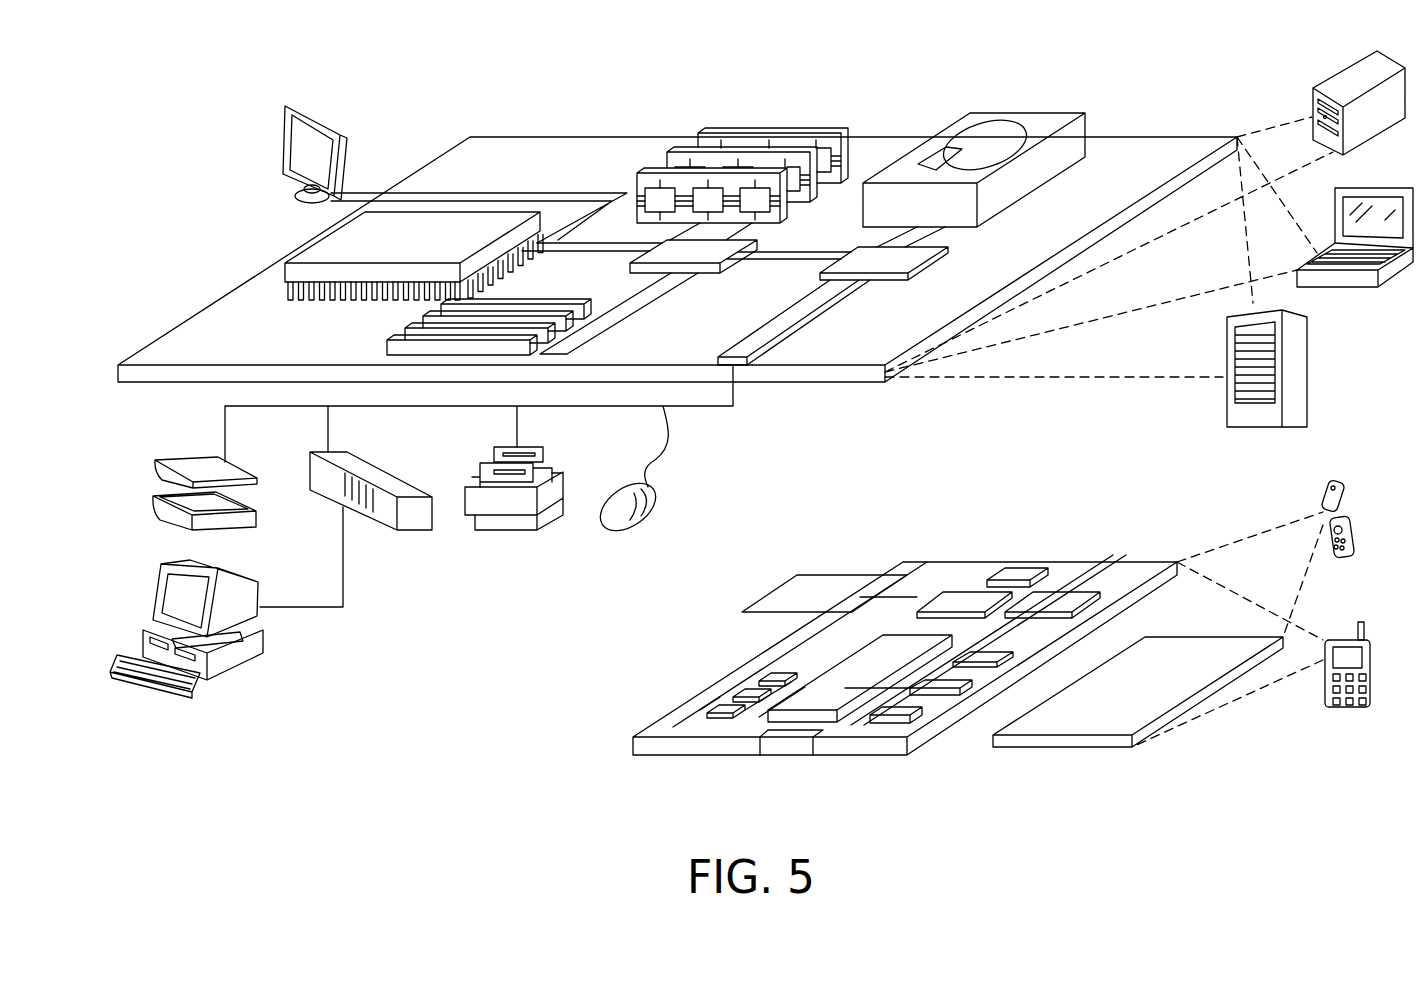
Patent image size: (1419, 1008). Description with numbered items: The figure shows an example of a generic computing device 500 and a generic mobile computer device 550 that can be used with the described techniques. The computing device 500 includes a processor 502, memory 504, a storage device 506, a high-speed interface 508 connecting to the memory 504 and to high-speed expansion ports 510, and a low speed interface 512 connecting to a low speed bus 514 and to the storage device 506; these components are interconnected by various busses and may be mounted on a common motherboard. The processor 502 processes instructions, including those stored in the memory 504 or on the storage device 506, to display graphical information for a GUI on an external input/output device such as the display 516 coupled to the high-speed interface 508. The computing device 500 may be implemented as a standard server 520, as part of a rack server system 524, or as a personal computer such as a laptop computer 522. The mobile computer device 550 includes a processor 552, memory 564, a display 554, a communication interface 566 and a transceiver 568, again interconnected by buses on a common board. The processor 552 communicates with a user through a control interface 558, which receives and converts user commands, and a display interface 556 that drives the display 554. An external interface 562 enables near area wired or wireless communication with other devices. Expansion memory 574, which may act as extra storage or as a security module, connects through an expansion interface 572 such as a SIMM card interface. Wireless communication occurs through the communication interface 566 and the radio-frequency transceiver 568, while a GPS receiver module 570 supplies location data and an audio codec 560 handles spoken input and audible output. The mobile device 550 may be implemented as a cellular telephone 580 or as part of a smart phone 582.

The computing device 500 is at (419, 76).
The processor 502 is at (311, 247).
The memory 504 is at (790, 128).
The storage device 506 is at (1022, 113).
The high-speed interface 508 is at (708, 250).
The high-speed expansion ports 510 is at (412, 324).
The low speed interface 512 is at (856, 258).
The low speed bus 514 is at (740, 353).
The display 516 is at (290, 106).
The standard server 520 is at (1337, 80).
The laptop computer 522 is at (1392, 187).
The rack server system 524 is at (1312, 370).
The mobile computer device 550 is at (584, 770).
The processor 552 is at (827, 685).
The display 554 is at (1180, 651).
The display interface 556 is at (907, 712).
The control interface 558 is at (947, 683).
The audio codec 560 is at (990, 652).
The external interface 562 is at (790, 737).
The memory 564 is at (738, 692).
The communication interface 566 is at (965, 596).
The transceiver 568 is at (1060, 596).
The GPS receiver module 570 is at (1018, 568).
The expansion interface 572 is at (897, 574).
The expansion memory 574 is at (803, 574).
The cellular telephone 580 is at (1330, 478).
The smart phone 582 is at (1343, 637).